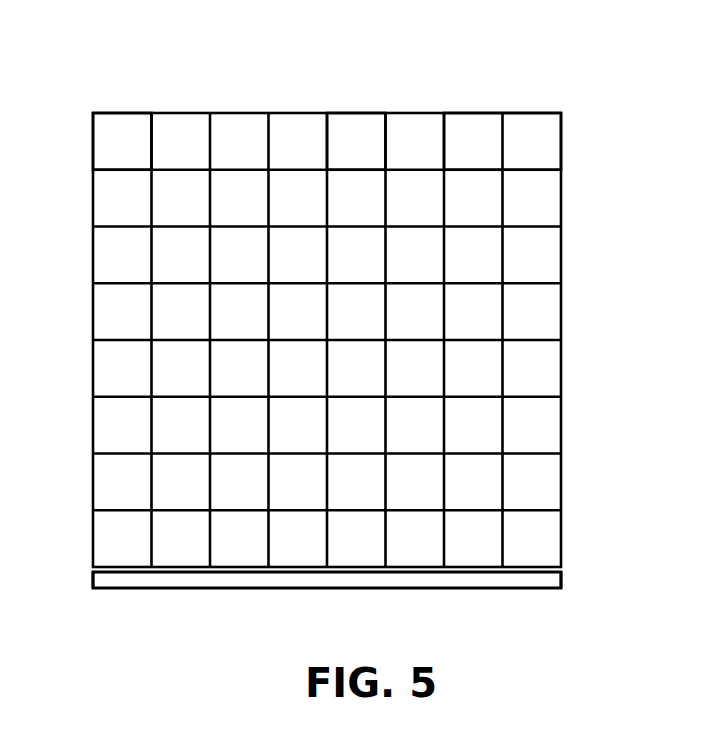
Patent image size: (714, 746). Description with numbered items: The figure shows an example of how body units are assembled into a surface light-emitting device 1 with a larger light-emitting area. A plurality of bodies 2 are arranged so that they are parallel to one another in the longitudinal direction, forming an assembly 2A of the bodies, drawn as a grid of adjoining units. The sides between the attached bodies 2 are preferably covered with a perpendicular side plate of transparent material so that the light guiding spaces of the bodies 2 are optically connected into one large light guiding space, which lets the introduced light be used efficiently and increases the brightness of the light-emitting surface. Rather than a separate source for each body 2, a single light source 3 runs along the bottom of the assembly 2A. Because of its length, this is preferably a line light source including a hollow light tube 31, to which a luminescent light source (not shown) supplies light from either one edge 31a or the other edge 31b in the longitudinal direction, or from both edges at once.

The solar cell module / panel 1 is at (241, 110).
The body 2 is at (459, 112).
The assembly of the bodies 2A is at (357, 110).
The light source 3 is at (178, 590).
The hollow light tube 31 is at (440, 592).
The one edge of the hollow light tube 31a is at (93, 580).
The other edge of the hollow light tube 31b is at (561, 580).